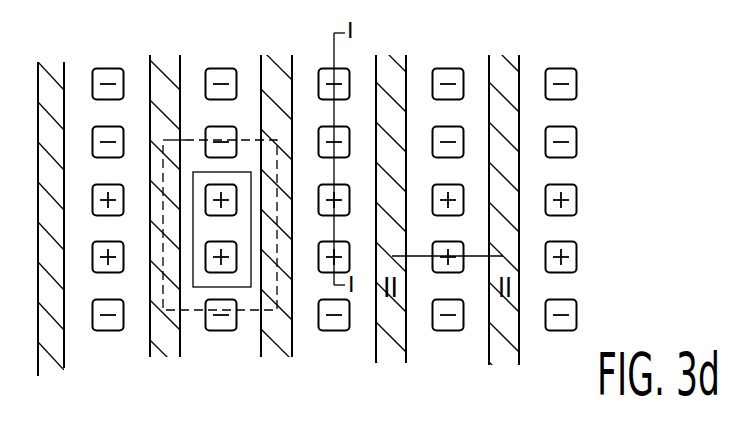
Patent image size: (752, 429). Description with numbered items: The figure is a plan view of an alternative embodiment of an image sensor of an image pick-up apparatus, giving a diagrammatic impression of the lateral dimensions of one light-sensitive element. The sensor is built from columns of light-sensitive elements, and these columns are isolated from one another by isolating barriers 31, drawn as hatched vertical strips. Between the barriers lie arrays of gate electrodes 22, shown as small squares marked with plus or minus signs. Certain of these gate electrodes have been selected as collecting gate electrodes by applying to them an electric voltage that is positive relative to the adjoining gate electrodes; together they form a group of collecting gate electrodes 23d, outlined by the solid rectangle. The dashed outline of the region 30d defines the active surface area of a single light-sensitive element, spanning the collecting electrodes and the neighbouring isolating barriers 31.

The gate electrodes 22 is at (462, 248).
The group of collecting gate electrodes 23d is at (247, 297).
The region 30d is at (185, 140).
The isolating barriers 31 is at (57, 347).